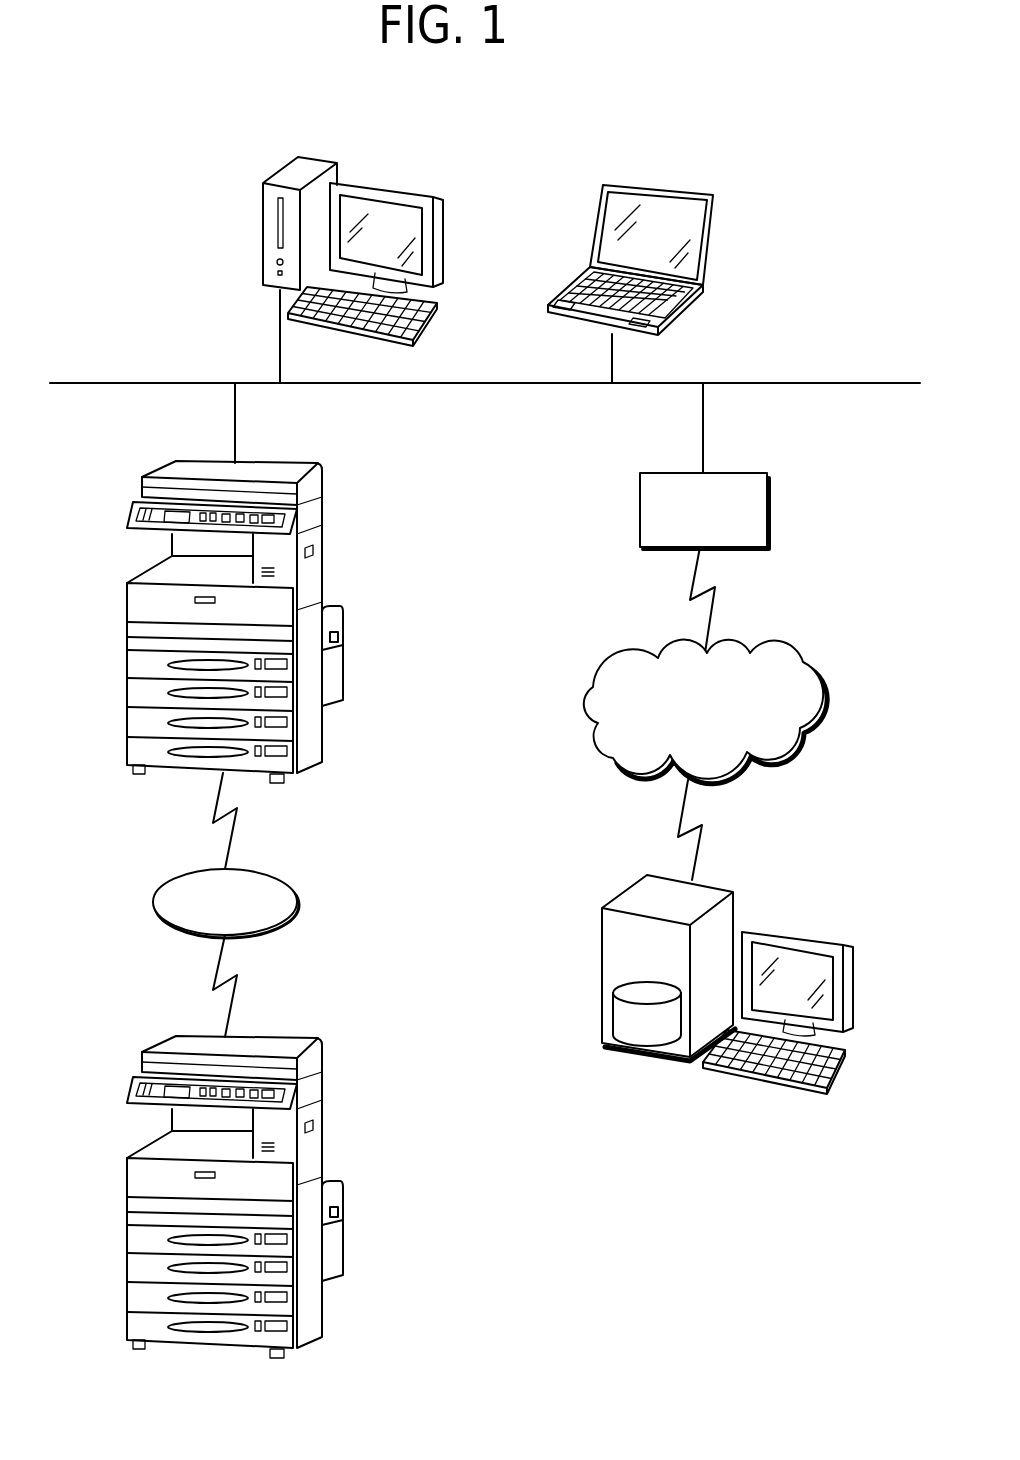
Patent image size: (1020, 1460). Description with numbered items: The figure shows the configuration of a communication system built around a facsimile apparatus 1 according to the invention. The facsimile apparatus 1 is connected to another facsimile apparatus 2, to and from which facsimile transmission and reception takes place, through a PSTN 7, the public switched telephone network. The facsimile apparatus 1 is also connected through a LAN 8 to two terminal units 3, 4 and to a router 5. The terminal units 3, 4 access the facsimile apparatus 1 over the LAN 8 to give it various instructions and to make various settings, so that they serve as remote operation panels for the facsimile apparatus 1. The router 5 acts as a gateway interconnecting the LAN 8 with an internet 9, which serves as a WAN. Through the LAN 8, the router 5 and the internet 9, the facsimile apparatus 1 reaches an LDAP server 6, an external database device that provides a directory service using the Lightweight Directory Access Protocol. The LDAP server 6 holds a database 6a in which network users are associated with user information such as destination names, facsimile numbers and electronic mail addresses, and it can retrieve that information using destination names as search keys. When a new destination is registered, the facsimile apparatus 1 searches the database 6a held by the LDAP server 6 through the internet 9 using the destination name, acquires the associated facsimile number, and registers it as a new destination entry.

The facsimile apparatus 1 is at (137, 487).
The facsimile apparatus 2 is at (137, 1062).
The terminal unit 3 is at (408, 190).
The terminal unit 4 is at (668, 190).
The router 5 is at (768, 500).
The LDAP server 6 is at (694, 966).
The database 6a is at (608, 1003).
The PSTN 7 is at (158, 887).
The LAN 8 is at (853, 383).
The internet 9 is at (815, 656).